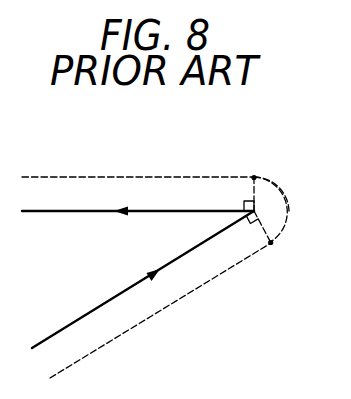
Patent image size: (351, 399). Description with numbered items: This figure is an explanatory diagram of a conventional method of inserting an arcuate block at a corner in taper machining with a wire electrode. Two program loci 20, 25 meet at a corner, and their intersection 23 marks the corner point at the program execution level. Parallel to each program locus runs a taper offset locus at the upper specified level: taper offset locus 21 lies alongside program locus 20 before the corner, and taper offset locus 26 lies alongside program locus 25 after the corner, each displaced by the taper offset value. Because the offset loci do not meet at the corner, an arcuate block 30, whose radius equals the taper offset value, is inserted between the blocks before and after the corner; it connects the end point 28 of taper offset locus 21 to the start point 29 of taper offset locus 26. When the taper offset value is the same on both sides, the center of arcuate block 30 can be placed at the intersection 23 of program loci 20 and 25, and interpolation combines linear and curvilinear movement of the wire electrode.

The program locus 20 is at (70, 322).
The taper offset locus 21 is at (163, 308).
The intersection of the program loci 23 is at (282, 197).
The program locus 25 is at (76, 213).
The taper offset locus 26 is at (131, 176).
The end point of the taper offset locus 28 is at (271, 245).
The start point of the taper offset locus 29 is at (255, 176).
The arcuate block 30 is at (291, 211).